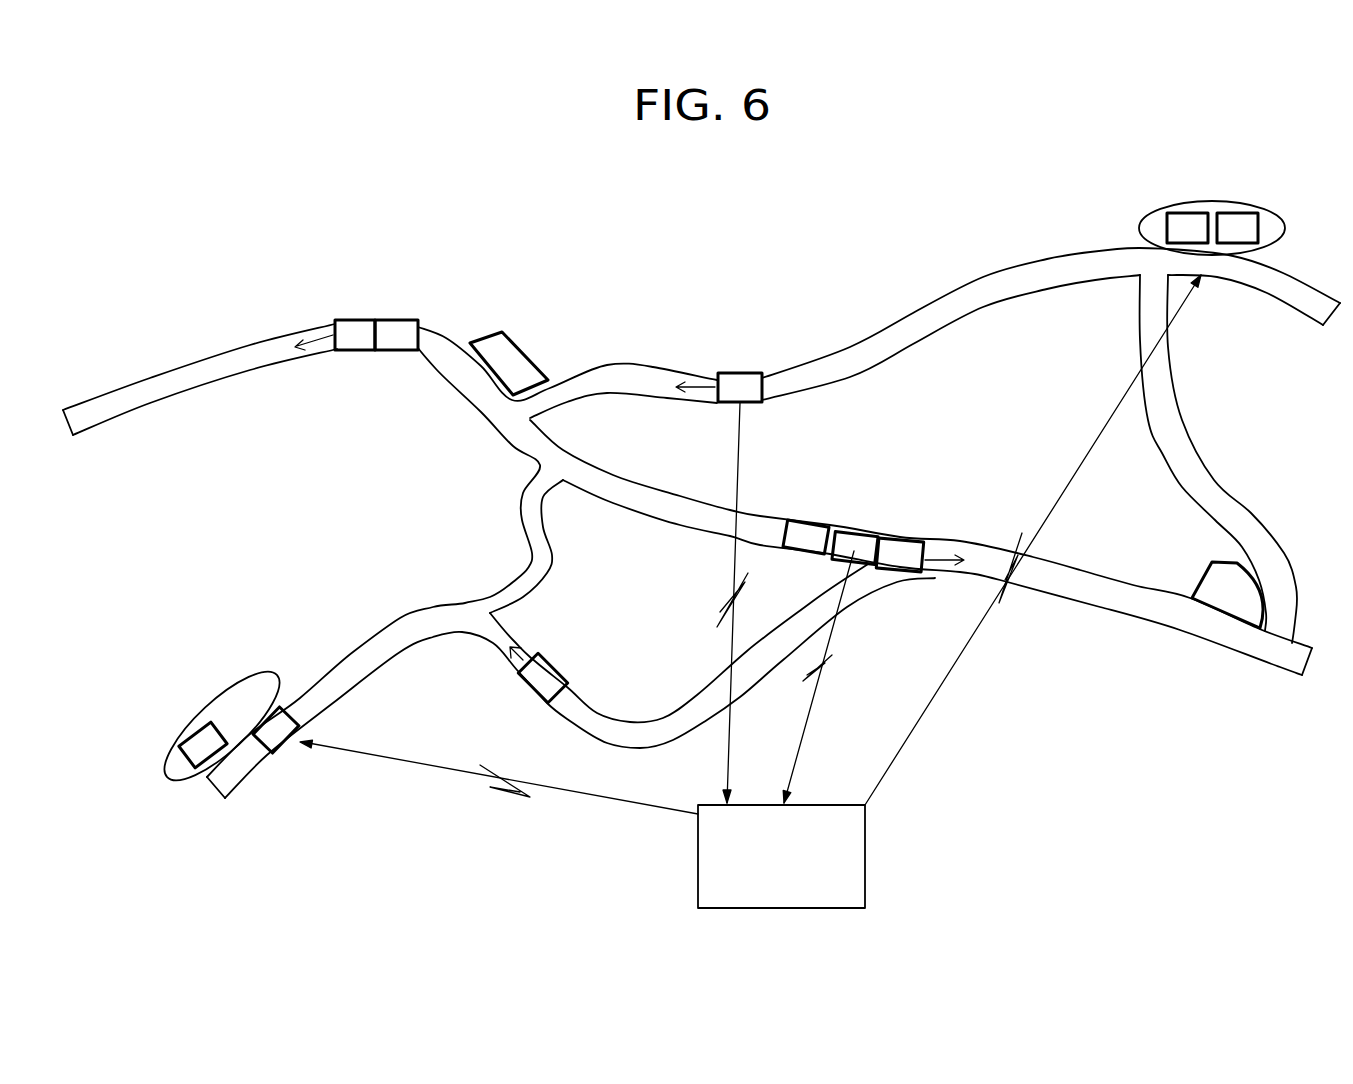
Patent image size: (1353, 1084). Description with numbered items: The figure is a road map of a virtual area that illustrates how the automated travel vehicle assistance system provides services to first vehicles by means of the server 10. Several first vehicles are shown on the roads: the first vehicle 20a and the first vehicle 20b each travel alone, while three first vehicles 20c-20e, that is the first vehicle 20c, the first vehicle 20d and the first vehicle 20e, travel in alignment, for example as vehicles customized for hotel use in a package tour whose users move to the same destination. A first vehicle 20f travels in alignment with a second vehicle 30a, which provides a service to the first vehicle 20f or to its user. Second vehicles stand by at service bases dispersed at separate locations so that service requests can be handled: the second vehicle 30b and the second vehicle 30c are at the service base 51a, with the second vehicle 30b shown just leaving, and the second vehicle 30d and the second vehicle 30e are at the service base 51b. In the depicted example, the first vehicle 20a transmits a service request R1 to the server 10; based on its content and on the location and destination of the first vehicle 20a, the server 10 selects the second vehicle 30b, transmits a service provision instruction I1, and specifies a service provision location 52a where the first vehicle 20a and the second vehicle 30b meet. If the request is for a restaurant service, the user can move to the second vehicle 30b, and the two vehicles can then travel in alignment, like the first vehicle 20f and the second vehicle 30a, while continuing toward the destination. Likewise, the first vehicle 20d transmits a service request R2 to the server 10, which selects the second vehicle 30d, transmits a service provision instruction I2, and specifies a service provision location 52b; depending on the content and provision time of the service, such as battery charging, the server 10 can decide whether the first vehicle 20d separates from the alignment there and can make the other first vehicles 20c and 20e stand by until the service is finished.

The server 10 is at (865, 857).
The first vehicle 20a is at (741, 380).
The first vehicle 20b is at (547, 673).
The first vehicle 20c is at (806, 537).
The first vehicle 20d is at (855, 547).
The first vehicle 20e is at (899, 555).
The first vehicles traveling in alignment 20c-20e is at (852, 515).
The first vehicle 20f is at (353, 328).
The second vehicle 30a is at (395, 327).
The second vehicle 30b is at (277, 733).
The second vehicle 30c is at (200, 742).
The second vehicle 30d is at (1175, 225).
The second vehicle 30e is at (1248, 222).
The service base 51a is at (217, 695).
The service base 51b is at (1209, 199).
The service provision location 52a is at (516, 352).
The service provision location 52b is at (1208, 583).
The service request R1 is at (720, 603).
The service request R2 is at (820, 677).
The service provision instruction I1 is at (499, 778).
The service provision instruction I2 is at (1033, 540).